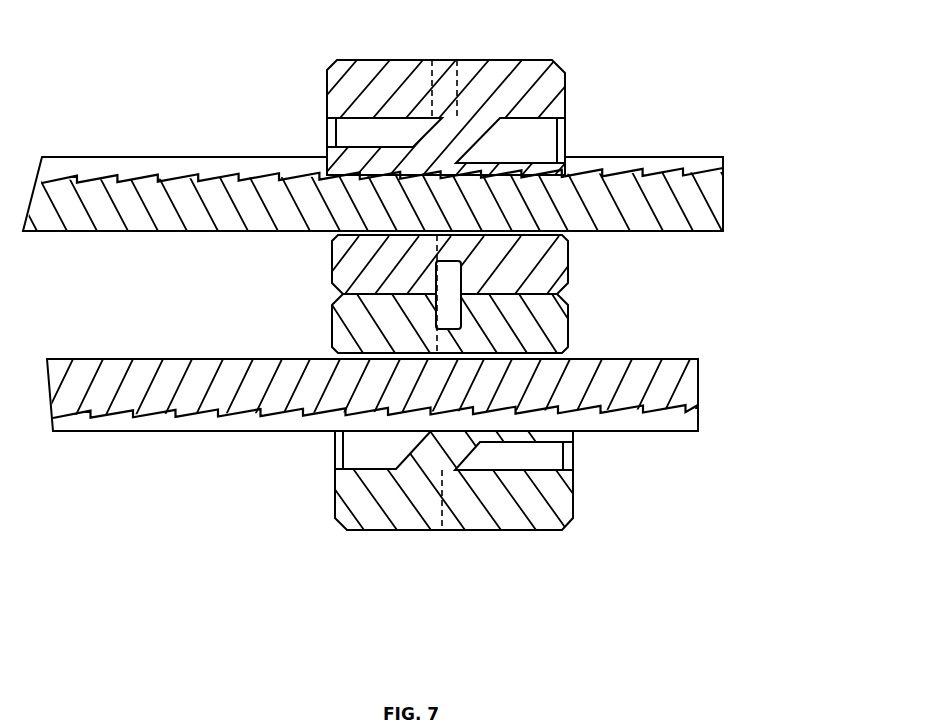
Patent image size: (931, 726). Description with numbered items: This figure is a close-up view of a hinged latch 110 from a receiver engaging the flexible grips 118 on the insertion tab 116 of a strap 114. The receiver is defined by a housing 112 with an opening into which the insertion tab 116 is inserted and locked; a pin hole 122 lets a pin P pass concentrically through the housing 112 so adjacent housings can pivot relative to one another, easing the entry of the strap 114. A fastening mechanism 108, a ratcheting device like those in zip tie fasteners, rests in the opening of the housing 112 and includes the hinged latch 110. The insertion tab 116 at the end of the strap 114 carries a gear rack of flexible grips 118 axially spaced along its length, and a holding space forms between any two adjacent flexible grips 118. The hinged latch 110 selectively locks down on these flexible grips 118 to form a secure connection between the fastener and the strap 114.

The fastening mechanism 108 is at (451, 287).
The hinged latch 110 is at (327, 152).
The housing 112 is at (567, 128).
The strap 114 is at (118, 157).
The insertion tab 116 is at (723, 205).
The flexible grips 118 is at (307, 177).
The pin hole 122 is at (463, 80).
The pin P is at (463, 278).